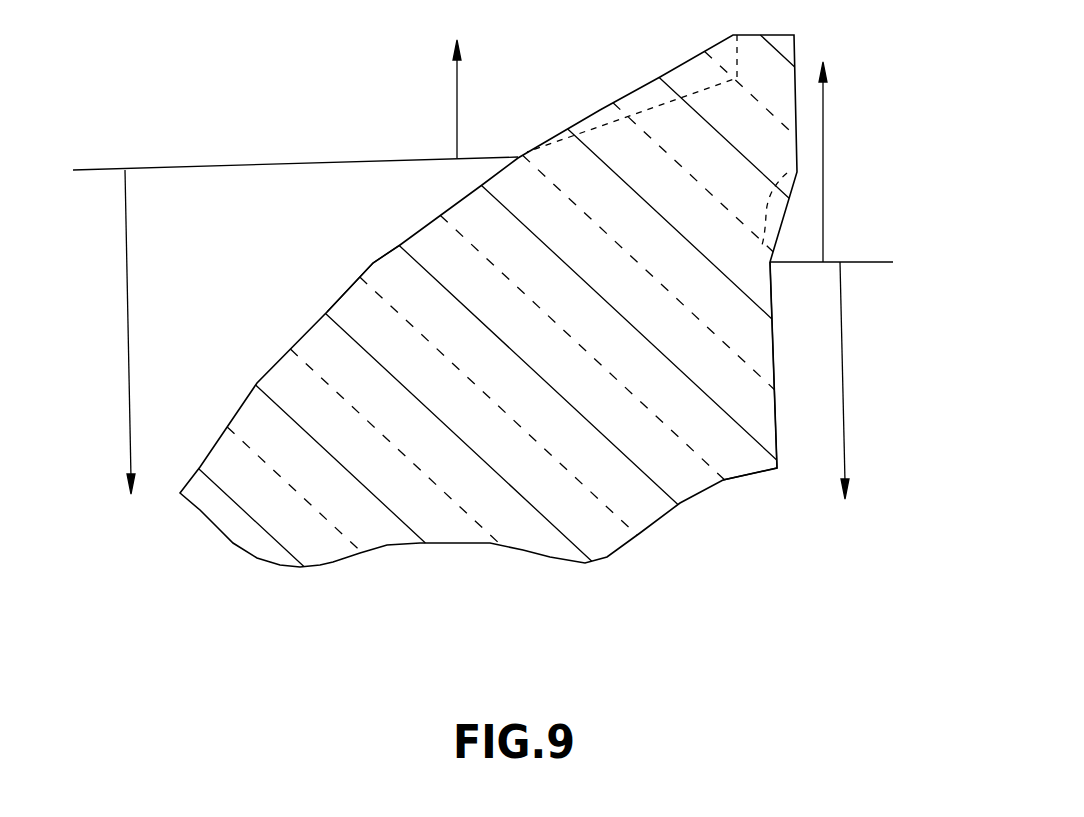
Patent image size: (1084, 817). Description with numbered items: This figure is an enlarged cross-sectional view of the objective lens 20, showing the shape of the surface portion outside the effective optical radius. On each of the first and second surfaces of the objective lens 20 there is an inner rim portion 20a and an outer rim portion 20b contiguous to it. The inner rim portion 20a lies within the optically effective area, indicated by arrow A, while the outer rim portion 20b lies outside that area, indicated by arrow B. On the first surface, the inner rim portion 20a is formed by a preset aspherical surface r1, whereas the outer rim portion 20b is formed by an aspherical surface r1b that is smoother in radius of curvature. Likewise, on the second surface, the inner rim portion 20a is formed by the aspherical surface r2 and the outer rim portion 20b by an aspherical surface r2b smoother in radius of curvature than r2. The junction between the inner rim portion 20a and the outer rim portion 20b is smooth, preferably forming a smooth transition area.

The objective lens 20 is at (325, 568).
The inner rim portion 20a is at (130, 357).
The outer rim portion 20b is at (455, 93).
The aspherical surface r1 is at (375, 263).
The aspherical surface r1b is at (627, 92).
The aspherical surface r2 is at (777, 440).
The aspherical surface r2b is at (787, 220).